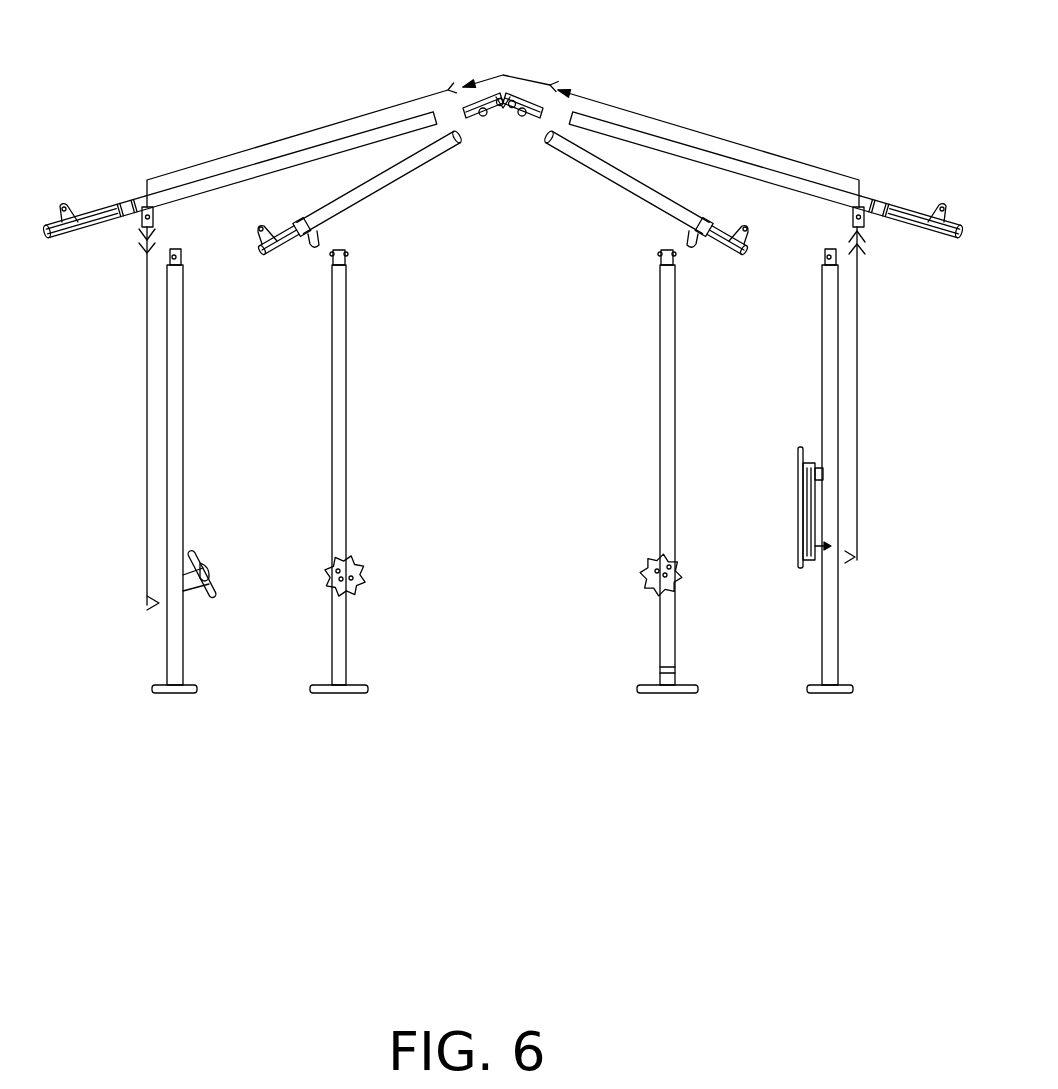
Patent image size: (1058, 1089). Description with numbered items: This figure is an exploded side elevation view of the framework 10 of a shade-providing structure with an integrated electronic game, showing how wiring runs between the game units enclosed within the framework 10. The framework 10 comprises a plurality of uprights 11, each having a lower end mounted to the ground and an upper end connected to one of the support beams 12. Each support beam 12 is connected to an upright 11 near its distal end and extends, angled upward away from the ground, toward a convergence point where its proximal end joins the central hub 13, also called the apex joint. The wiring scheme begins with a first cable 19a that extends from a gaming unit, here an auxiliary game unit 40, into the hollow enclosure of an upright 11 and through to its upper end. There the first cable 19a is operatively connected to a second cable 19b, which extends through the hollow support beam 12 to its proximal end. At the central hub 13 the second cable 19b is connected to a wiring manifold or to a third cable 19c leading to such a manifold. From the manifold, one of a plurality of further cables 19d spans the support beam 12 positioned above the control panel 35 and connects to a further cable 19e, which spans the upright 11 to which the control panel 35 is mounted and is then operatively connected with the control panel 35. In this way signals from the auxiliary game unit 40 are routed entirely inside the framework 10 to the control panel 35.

The framework 10 is at (887, 140).
The upright 11 is at (337, 351).
The support beam 12 is at (400, 172).
The central hub 13 is at (503, 96).
The first cable 19a is at (147, 358).
The second cable 19b is at (330, 124).
The third cable 19c is at (537, 80).
The further cable 19d is at (700, 128).
The further cable 19e is at (857, 358).
The control panel 35 is at (798, 514).
The auxiliary game unit 40 is at (200, 563).